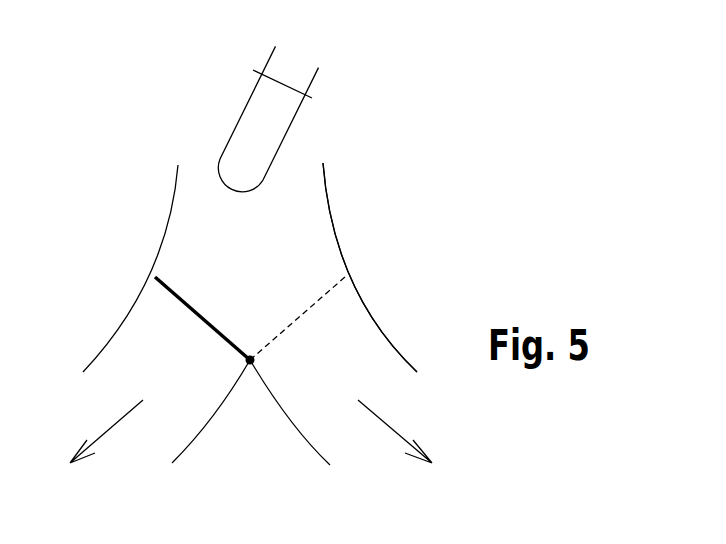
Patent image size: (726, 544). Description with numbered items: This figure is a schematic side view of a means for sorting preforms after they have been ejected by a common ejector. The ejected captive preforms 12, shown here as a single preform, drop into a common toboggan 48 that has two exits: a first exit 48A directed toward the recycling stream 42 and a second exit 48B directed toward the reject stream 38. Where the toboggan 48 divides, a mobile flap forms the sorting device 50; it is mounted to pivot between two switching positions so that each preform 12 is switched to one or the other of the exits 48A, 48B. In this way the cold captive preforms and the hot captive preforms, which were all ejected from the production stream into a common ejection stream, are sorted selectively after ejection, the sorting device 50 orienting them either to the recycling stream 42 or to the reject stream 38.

The captive preform 12 is at (243, 109).
The common toboggan 48 is at (290, 220).
The first exit 48A is at (125, 372).
The second exit 48B is at (350, 363).
The sorting device 50 is at (178, 302).
The recycling stream 42 is at (122, 420).
The reject stream 38 is at (377, 420).